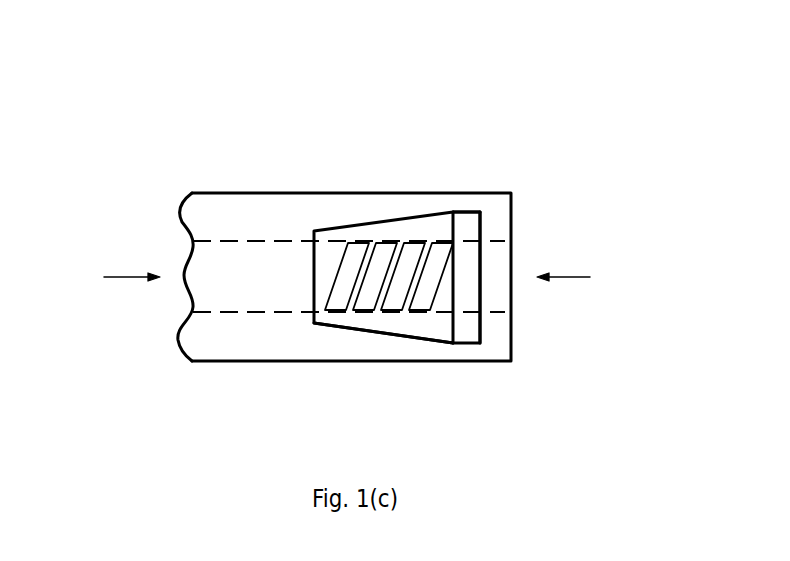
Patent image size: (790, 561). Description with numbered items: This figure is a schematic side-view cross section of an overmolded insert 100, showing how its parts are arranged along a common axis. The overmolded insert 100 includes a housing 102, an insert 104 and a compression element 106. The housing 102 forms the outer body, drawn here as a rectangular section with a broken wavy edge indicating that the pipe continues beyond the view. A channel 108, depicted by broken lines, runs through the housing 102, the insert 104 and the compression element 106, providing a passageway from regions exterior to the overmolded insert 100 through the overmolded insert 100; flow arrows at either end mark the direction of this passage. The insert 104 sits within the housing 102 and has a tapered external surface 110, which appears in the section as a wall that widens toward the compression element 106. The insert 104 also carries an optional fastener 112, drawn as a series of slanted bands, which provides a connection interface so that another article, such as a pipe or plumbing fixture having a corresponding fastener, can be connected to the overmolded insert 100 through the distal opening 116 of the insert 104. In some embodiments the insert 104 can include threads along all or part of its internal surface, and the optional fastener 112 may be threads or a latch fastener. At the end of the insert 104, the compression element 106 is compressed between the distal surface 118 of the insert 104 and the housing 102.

The overmolded insert 100 is at (367, 95).
The housing 102 is at (225, 202).
The insert 104 is at (409, 229).
The compression element 106 is at (466, 334).
The channel 108 is at (347, 265).
The tapered external surface 110 is at (349, 329).
The optional fastener 112 is at (342, 264).
The distal opening 116 is at (462, 277).
The distal surface 118 is at (457, 230).